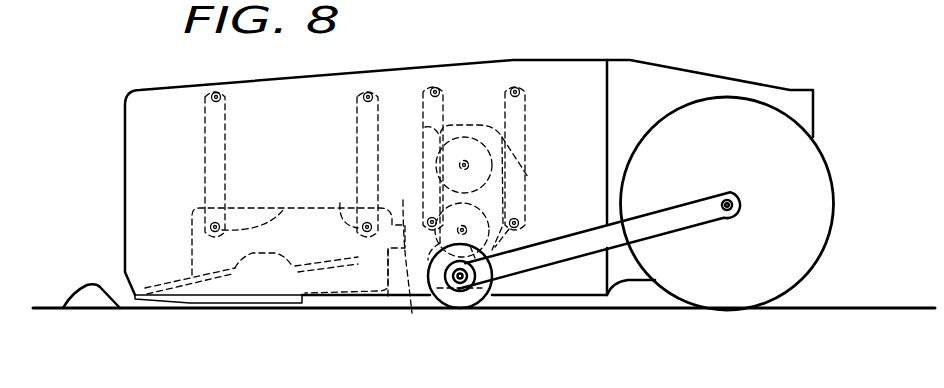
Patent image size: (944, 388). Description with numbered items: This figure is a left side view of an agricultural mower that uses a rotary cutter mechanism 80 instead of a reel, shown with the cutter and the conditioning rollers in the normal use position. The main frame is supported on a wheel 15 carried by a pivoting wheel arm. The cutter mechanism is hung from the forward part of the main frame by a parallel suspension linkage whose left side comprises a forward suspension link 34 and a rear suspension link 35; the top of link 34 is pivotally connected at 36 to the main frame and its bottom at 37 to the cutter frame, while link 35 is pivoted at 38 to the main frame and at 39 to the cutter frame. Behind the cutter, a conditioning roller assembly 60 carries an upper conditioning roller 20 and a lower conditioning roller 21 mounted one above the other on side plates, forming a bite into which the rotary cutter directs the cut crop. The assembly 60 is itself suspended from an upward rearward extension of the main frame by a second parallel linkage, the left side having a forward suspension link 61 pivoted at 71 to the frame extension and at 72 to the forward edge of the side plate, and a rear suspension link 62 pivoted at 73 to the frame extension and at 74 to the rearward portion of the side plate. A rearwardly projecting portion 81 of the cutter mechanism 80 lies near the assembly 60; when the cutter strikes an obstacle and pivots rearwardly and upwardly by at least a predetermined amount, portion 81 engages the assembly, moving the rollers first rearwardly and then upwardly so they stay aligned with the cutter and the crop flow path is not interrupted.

The wheel 15 is at (728, 313).
The conditioning roller 20 is at (497, 128).
The conditioning roller 21 is at (436, 306).
The forward suspension link 34 is at (230, 148).
The rear suspension link 35 is at (356, 143).
The pivotal connection 36 is at (218, 93).
The pivotal connection 37 is at (287, 208).
The pivotal connection 38 is at (369, 93).
The pivotal connection 39 is at (360, 227).
The conditioning roller assembly 60 is at (535, 185).
The forward suspension link 61 is at (423, 126).
The rear suspension link 62 is at (526, 126).
The pivotal connection 71 is at (436, 87).
The pivotal connection 72 is at (428, 222).
The pivotal connection 73 is at (516, 87).
The pivotal connection 74 is at (520, 221).
The rotary cutter mechanism 80 is at (190, 221).
The rearwardly projecting portion 81 is at (395, 300).